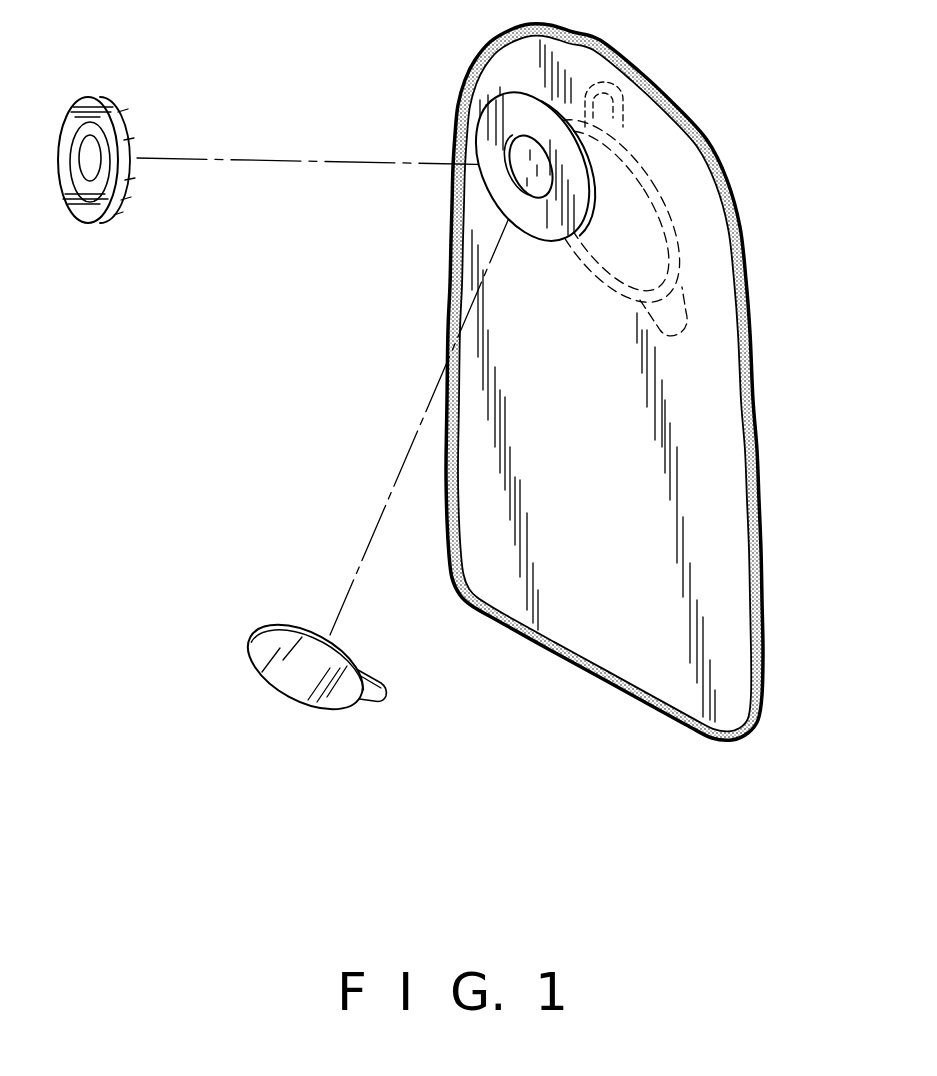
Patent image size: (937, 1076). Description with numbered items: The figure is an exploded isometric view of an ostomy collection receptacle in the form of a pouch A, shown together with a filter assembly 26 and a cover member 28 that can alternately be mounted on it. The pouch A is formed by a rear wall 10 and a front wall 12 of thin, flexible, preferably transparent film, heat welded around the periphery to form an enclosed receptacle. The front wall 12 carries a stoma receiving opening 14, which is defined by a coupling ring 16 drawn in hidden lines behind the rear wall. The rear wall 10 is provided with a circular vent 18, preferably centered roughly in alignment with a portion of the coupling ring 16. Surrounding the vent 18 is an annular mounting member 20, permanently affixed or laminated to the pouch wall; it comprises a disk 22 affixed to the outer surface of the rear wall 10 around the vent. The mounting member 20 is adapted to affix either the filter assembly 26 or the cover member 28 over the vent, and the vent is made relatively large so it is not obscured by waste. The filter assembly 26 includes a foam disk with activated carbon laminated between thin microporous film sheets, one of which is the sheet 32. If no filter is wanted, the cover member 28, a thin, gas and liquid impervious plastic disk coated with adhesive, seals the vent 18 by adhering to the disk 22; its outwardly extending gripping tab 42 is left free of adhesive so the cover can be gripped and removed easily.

The rear wall 10 is at (580, 382).
The front wall 12 is at (753, 383).
The stoma receiving opening 14 is at (660, 175).
The coupling ring 16 is at (633, 217).
The circular vent 18 is at (510, 160).
The mounting member 20 is at (476, 114).
The disk 22 is at (503, 89).
The filter assembly 26 is at (97, 152).
The cover member 28 is at (290, 692).
The microporous film sheet 32 is at (88, 163).
The gripping tab 42 is at (367, 693).
The pouch A is at (779, 316).